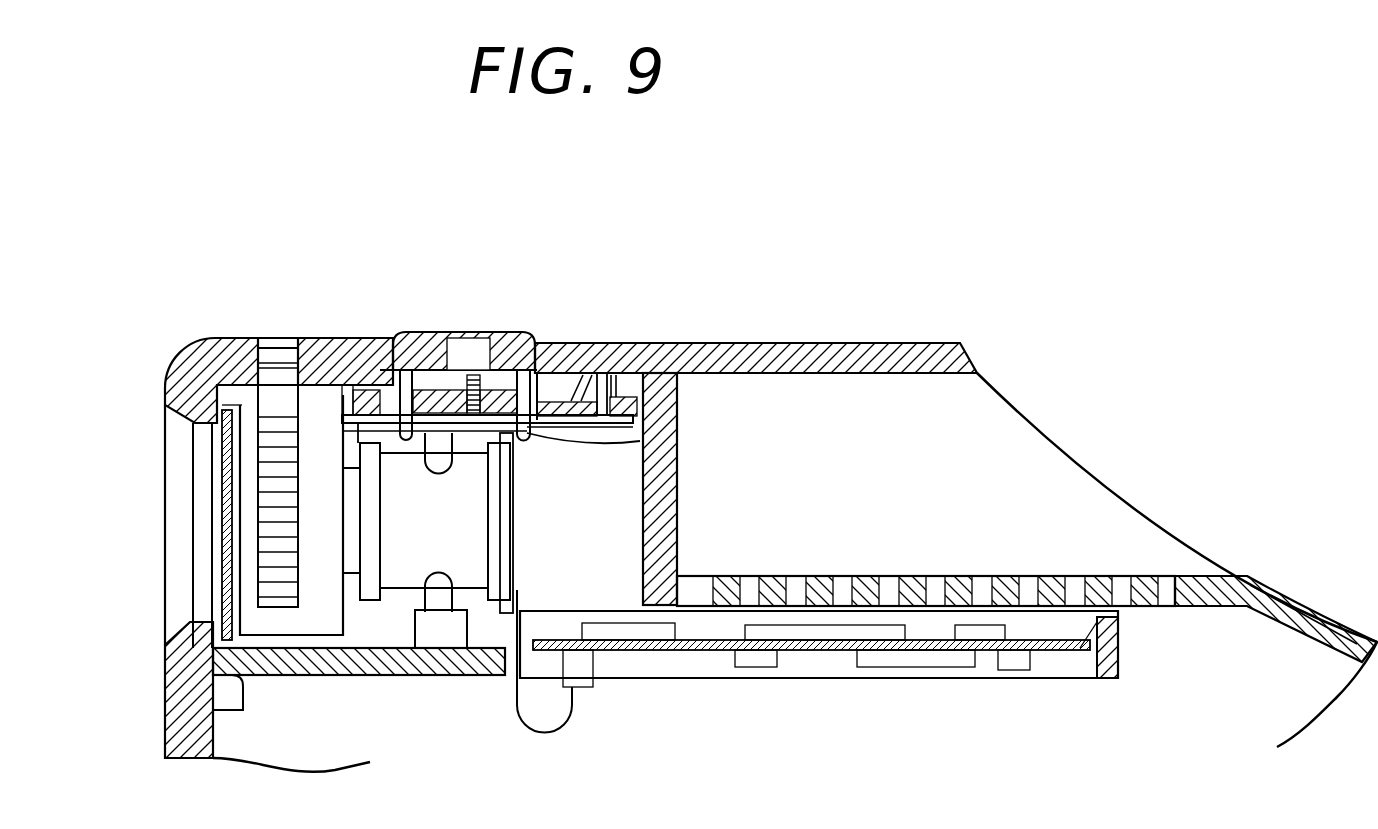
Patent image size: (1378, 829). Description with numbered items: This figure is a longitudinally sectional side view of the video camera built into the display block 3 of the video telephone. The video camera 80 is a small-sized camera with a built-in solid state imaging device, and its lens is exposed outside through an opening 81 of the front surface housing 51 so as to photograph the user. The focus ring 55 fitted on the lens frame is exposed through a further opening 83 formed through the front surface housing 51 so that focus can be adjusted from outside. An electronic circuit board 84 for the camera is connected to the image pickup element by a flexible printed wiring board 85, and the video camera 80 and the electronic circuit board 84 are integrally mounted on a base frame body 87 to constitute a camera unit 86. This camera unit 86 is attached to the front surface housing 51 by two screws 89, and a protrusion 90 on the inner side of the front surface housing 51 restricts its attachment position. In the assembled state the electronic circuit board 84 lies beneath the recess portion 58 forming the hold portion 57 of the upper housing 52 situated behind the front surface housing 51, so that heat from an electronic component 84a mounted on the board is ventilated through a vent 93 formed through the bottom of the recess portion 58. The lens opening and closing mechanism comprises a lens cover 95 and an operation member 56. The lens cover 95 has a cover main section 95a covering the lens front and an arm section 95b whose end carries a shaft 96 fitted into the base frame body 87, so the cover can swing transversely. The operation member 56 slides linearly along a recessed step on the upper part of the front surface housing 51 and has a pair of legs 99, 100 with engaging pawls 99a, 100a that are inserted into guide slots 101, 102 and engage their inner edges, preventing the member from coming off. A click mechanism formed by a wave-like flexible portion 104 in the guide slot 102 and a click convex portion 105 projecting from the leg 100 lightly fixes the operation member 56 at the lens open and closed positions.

The display block 3 is at (806, 345).
The front surface housing 51 is at (192, 362).
The upper housing 52 is at (1115, 487).
The focus ring 55 is at (283, 347).
The operation member 56 is at (482, 345).
The hold portion 57 is at (901, 343).
The recess portion 58 is at (985, 412).
The video camera 80 is at (402, 558).
The opening 81 is at (208, 434).
The opening 83 is at (268, 347).
The electronic circuit board 84 is at (835, 650).
The electronic component 84a is at (795, 640).
The flexible printed wiring board 85 is at (560, 730).
The camera unit 86 is at (445, 676).
The base frame body 87 is at (498, 680).
The screws 89 is at (474, 378).
The protrusion 90 is at (222, 722).
The vent 93 is at (843, 585).
The lens cover 95 is at (228, 480).
The cover main section 95a is at (228, 563).
The arm section 95b is at (600, 372).
The shaft 96 is at (648, 368).
The leg 99 is at (678, 375).
The engaging pawl 99a is at (553, 372).
The leg 100 is at (338, 432).
The engaging pawl 100a is at (360, 395).
The guide slot 101 is at (518, 430).
The guide slot 102 is at (403, 372).
The wave-like flexible portion 104 is at (466, 392).
The click convex portion 105 is at (412, 345).